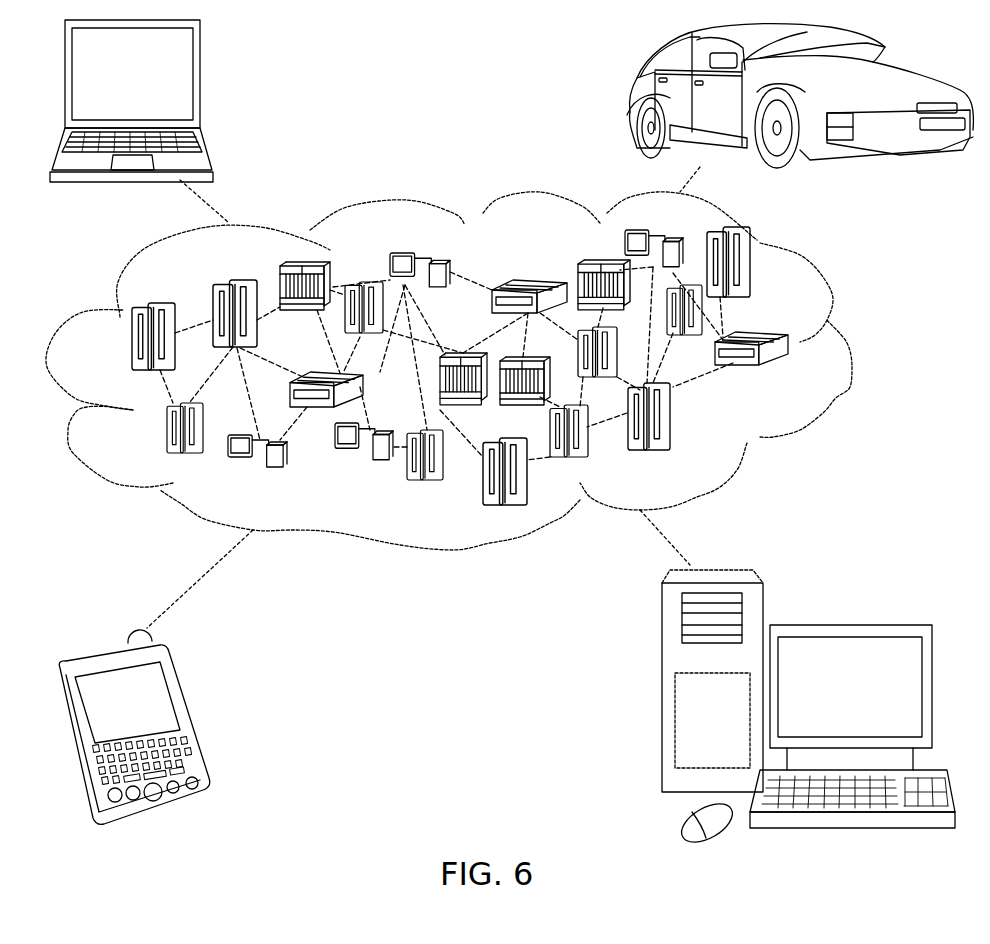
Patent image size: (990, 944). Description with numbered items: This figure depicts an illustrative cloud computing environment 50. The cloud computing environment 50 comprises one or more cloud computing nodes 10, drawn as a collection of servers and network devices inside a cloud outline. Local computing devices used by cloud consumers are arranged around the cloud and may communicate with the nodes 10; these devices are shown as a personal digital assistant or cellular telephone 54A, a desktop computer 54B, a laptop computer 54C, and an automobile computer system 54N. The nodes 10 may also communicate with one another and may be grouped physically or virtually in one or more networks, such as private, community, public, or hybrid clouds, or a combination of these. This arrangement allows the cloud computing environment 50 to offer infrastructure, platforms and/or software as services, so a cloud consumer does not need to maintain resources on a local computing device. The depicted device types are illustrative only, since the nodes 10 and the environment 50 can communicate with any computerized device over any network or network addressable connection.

The cloud computing node 10 is at (512, 366).
The cloud computing environment 50 is at (477, 397).
The personal digital assistant or cellular telephone 54A is at (161, 727).
The desktop computer 54B is at (808, 710).
The laptop computer 54C is at (161, 101).
The automobile computer system 54N is at (764, 96).